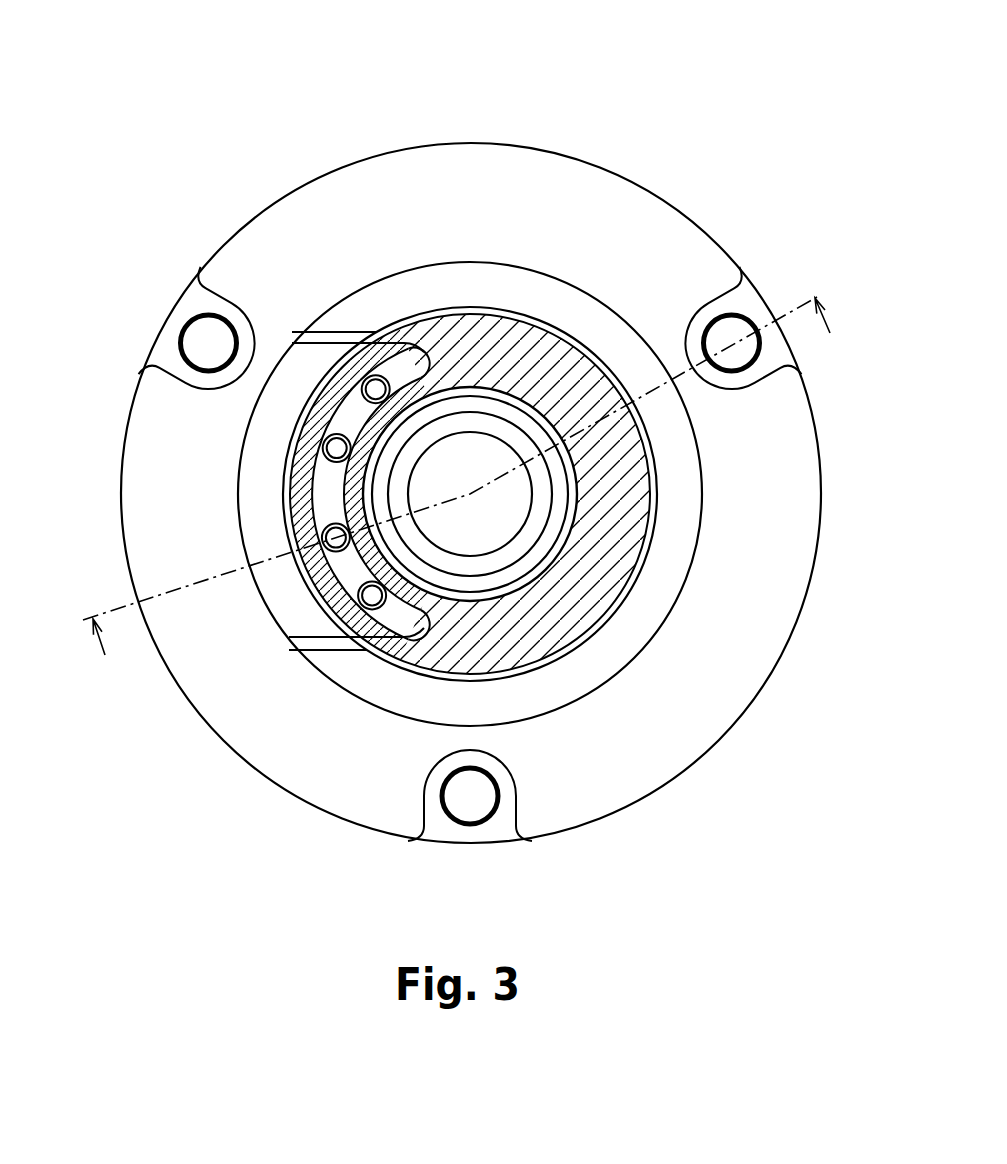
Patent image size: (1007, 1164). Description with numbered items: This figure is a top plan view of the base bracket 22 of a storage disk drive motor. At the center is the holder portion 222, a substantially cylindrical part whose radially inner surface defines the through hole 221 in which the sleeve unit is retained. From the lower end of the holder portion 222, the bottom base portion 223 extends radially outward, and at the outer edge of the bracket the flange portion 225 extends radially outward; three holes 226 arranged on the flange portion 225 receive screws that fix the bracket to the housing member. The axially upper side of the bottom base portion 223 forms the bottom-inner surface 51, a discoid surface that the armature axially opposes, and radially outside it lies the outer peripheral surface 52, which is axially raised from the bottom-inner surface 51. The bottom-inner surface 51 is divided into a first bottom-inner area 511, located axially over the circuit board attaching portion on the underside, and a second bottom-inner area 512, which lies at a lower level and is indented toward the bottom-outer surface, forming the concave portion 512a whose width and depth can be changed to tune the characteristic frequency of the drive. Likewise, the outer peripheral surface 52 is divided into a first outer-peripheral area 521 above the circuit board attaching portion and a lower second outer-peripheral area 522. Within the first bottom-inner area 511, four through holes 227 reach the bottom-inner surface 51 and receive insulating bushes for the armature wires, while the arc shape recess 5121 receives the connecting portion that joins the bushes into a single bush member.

The base bracket 22 is at (132, 42).
The bottom-inner surface 51 is at (324, 87).
The first bottom-inner area 511 is at (402, 340).
The second bottom-inner area 512 is at (491, 323).
The concave portion 512a is at (581, 349).
The arc shape recess 5121 is at (317, 494).
The outer peripheral surface 52 is at (154, 161).
The first outer-peripheral area 521 is at (289, 372).
The second outer-peripheral area 522 is at (340, 305).
The through hole 221 is at (496, 539).
The holder portion 222 is at (535, 512).
The bottom base portion 223 is at (627, 533).
The flange portion 225 is at (768, 625).
The hole 226 is at (198, 319).
The through holes 227 is at (318, 446).